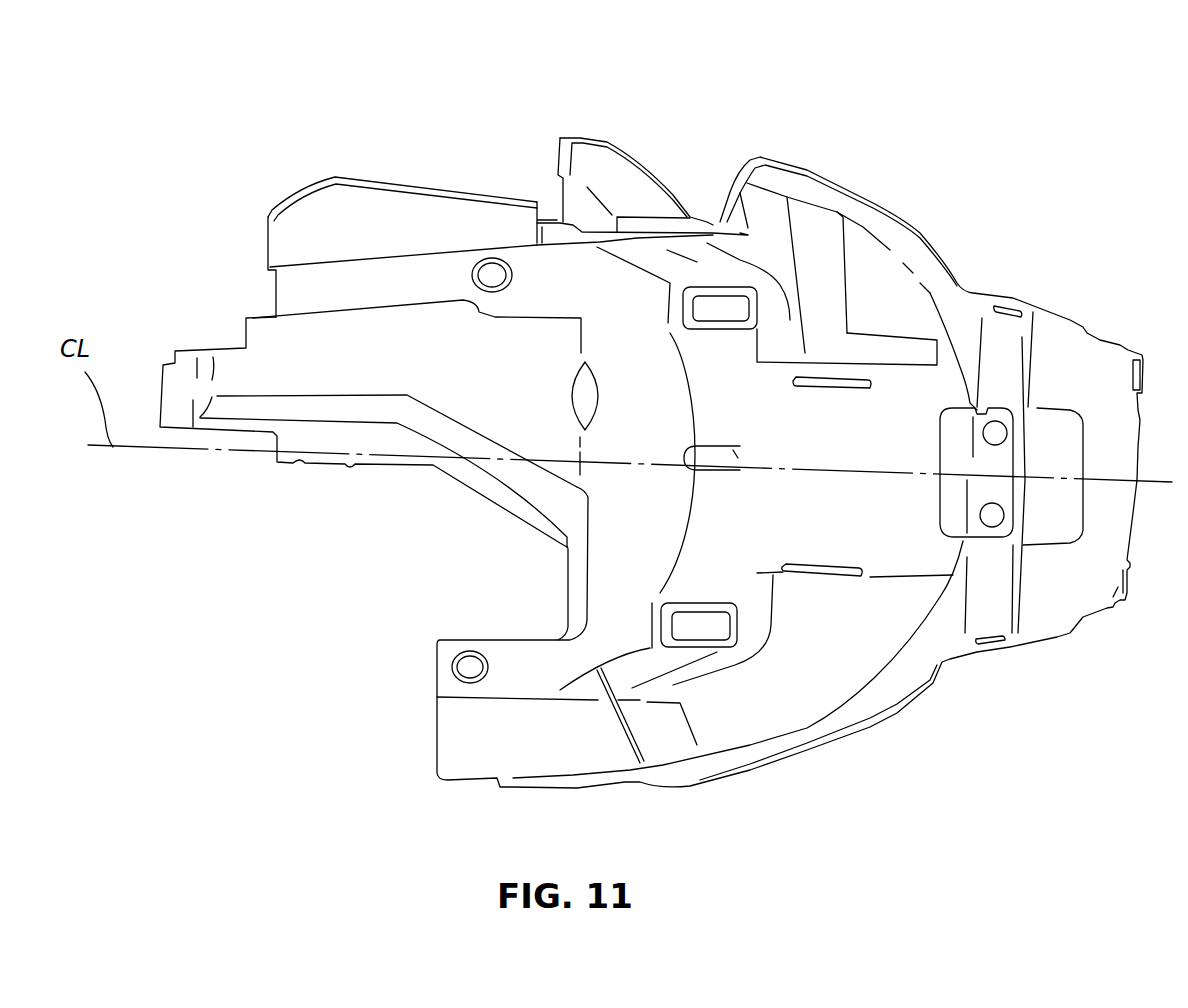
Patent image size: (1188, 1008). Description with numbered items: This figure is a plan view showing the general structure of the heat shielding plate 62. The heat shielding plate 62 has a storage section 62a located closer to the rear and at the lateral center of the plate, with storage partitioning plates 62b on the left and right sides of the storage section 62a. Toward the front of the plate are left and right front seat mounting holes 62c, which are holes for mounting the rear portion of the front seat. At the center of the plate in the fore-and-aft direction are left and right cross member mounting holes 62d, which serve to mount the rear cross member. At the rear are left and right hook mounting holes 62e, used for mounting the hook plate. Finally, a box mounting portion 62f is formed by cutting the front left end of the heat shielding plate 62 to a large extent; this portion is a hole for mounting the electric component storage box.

The heat shielding plate 62 is at (244, 193).
The storage section 62a is at (836, 484).
The storage partitioning plate 62b is at (850, 378).
The front seat mounting hole 62c is at (491, 262).
The cross member mounting hole 62d is at (712, 292).
The hook mounting hole 62e is at (993, 418).
The box mounting portion 62f is at (487, 497).